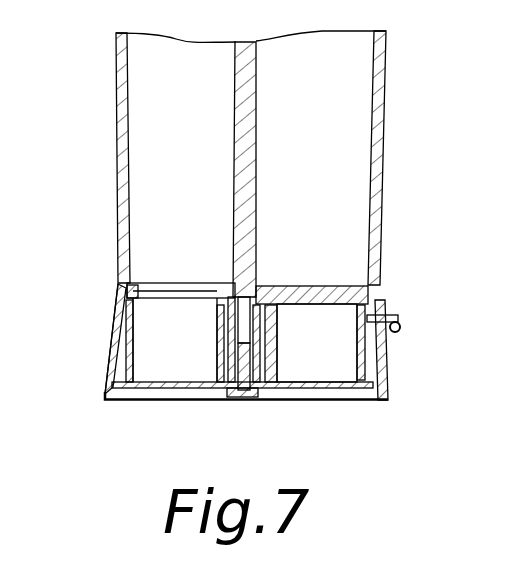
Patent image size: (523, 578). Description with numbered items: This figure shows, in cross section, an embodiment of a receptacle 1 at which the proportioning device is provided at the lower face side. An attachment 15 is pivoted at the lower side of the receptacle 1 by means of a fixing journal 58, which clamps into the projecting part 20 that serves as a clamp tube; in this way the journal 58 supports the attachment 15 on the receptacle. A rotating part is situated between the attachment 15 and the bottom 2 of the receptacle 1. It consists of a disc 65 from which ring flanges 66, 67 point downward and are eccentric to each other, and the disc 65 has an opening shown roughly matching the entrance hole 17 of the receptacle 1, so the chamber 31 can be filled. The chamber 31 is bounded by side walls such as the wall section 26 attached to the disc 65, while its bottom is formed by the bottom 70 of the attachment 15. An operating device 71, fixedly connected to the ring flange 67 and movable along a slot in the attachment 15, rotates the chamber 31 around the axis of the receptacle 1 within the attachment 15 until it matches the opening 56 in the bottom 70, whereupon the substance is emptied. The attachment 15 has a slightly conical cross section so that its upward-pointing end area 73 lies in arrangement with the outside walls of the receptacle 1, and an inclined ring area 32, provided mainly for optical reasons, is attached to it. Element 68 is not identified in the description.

The receptacle 1 is at (384, 130).
The bottom 2 is at (282, 288).
The attachment 15 is at (98, 351).
The filling hole 17 is at (187, 288).
The projecting part 20 is at (253, 355).
The wall section 26 is at (185, 349).
The chamber 31 is at (130, 399).
The inclined ring area 32 is at (112, 325).
The opening 56 is at (330, 387).
The fixing journal 58 is at (245, 398).
The disc 65 is at (342, 285).
The ring flange 66 is at (275, 360).
The ring flange 67 is at (367, 357).
The seal 68 is at (153, 296).
The bottom 70 is at (180, 388).
The operating device 71 is at (400, 320).
The end area 73 is at (118, 283).